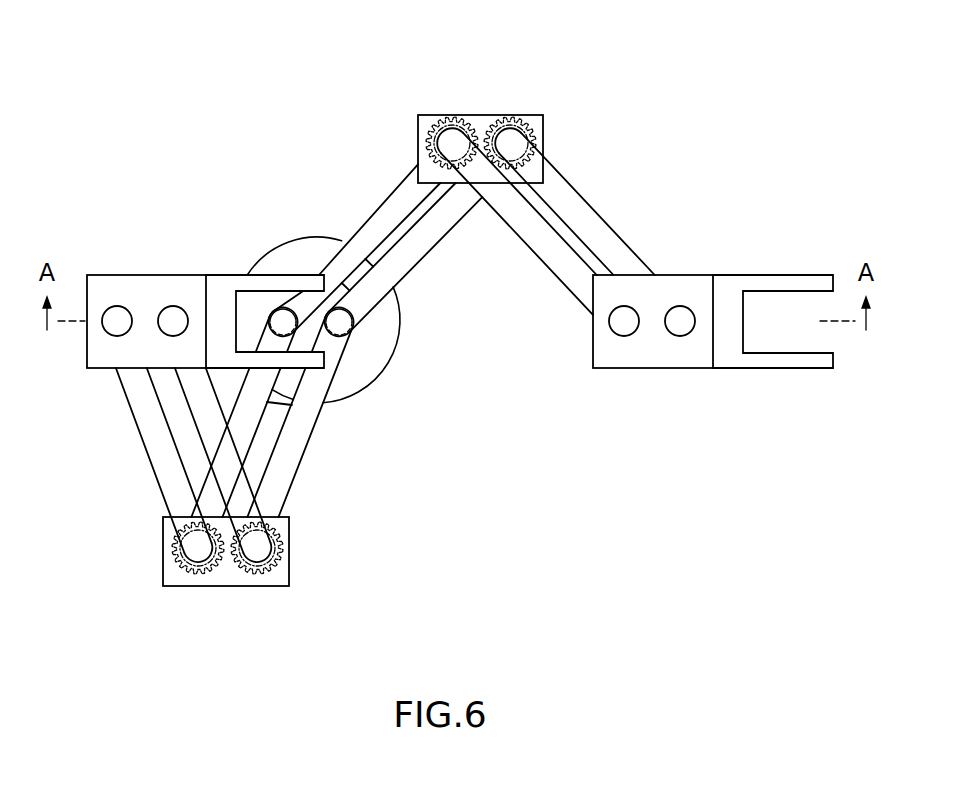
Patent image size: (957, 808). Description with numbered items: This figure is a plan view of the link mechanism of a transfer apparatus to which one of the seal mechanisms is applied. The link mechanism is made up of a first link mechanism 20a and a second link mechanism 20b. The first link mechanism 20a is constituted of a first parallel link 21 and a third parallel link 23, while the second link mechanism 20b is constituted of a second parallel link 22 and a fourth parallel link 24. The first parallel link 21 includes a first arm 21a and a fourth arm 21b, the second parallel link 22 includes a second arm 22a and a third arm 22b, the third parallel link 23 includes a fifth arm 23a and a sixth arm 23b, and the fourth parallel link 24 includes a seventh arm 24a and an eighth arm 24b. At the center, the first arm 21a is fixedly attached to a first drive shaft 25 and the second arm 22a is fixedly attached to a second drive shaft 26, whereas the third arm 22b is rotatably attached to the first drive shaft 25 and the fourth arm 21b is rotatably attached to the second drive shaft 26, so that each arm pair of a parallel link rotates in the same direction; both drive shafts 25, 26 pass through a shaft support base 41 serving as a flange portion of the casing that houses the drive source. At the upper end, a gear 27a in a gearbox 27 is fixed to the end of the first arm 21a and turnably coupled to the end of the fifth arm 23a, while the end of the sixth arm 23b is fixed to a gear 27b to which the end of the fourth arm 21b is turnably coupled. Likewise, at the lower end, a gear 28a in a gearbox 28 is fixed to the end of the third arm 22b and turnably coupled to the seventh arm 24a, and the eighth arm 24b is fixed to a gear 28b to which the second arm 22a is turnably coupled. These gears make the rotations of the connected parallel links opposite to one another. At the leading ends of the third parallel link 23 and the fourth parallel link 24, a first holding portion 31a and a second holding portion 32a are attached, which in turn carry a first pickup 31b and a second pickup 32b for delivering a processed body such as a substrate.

The first link mechanism 20a is at (495, 178).
The second link mechanism 20b is at (245, 493).
The first parallel link 21 is at (379, 198).
The first arm 21a is at (470, 262).
The fourth arm 21b is at (403, 187).
The second parallel link 22 is at (319, 412).
The second arm 22a is at (240, 447).
The third arm 22b is at (313, 417).
The third parallel link 23 is at (579, 242).
The fifth arm 23a is at (598, 195).
The sixth arm 23b is at (566, 290).
The fourth parallel link 24 is at (156, 465).
The seventh arm 24a is at (205, 455).
The eighth arm 24b is at (132, 398).
The first drive shaft 25 is at (342, 323).
The second drive shaft 26 is at (283, 310).
The gearbox 27 is at (487, 114).
The gear 27a is at (514, 118).
The gear 27b is at (451, 116).
The gearbox 28 is at (228, 587).
The gear 28a is at (277, 586).
The gear 28b is at (193, 586).
The first holding portion 31a is at (651, 369).
The first pickup 31b is at (790, 369).
The second holding portion 32a is at (130, 283).
The second pickup 32b is at (216, 285).
The shaft support base 41 is at (372, 372).